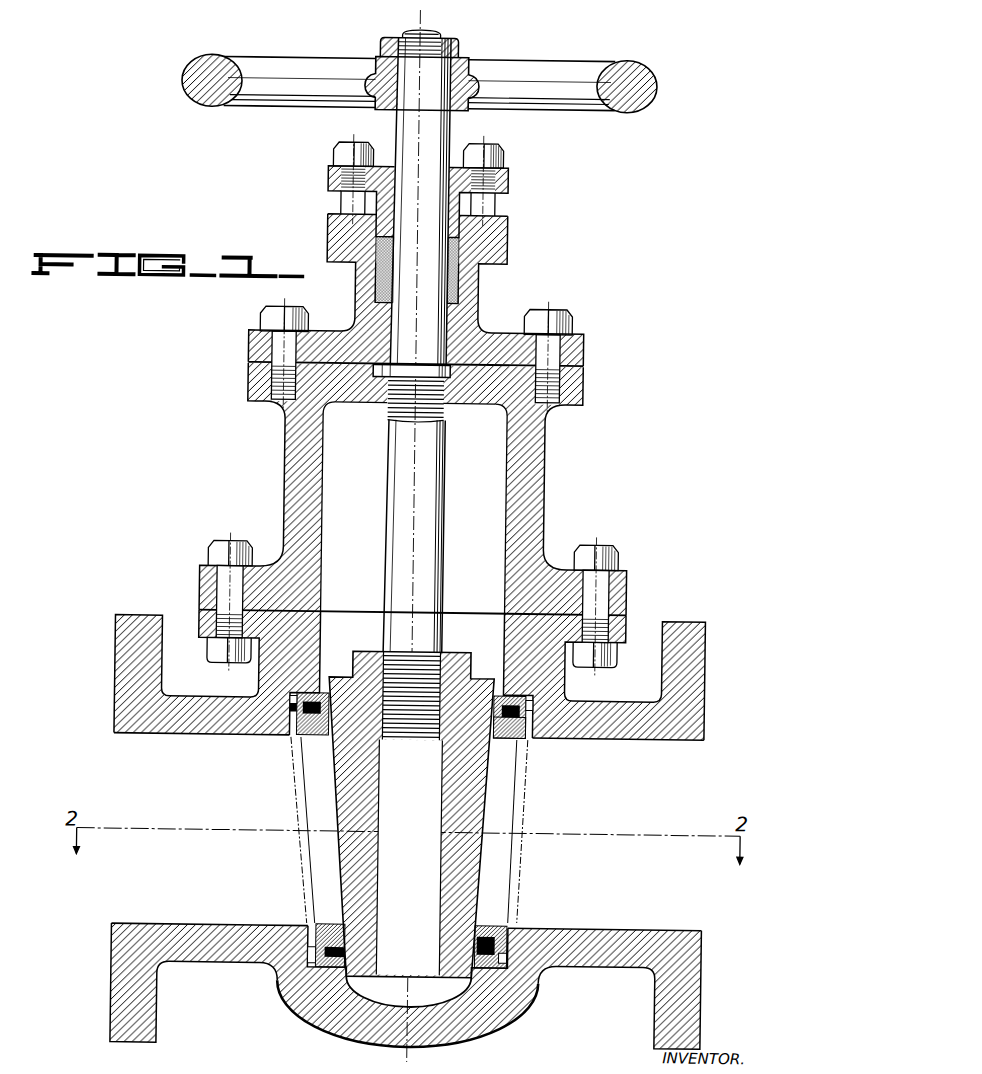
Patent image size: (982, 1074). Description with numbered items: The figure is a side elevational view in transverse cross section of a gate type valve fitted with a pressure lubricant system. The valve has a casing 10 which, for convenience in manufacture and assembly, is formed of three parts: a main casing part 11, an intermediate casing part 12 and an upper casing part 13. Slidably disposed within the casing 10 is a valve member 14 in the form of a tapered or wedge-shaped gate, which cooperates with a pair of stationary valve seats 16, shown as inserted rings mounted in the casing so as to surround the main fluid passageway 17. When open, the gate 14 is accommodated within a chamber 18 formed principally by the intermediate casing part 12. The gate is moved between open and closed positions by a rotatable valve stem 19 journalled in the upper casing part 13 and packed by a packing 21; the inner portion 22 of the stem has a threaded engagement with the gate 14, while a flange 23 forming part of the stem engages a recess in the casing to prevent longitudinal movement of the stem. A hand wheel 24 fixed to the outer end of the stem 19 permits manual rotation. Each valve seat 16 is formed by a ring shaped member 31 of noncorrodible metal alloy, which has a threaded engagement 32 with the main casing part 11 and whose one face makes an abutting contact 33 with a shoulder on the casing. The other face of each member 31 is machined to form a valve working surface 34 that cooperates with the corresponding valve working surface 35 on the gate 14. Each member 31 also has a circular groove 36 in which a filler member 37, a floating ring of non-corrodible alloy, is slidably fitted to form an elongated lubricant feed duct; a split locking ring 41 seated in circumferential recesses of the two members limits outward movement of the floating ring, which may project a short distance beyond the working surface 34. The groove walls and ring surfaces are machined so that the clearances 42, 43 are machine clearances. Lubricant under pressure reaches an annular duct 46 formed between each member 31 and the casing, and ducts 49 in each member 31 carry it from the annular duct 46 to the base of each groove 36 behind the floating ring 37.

The casing 10 is at (638, 570).
The main casing part 11 is at (696, 640).
The intermediate casing part 12 is at (532, 486).
The upper casing part 13 is at (474, 314).
The valve member 14 is at (462, 662).
The stationary valve seats 16 is at (286, 786).
The main fluid passageway 17 is at (696, 752).
The chamber 18 is at (491, 436).
The valve stem 19 is at (426, 245).
The packing 21 is at (444, 272).
The inner portion of stem 22 is at (427, 560).
The flange 23 is at (378, 377).
The hand wheel 24 is at (632, 101).
The ring shaped member 31 is at (500, 929).
The threaded engagement 32 is at (320, 698).
The abutting contact 33 is at (518, 819).
The valve working surface 34 is at (332, 729).
The valve working surface 35 is at (523, 776).
The groove 36 is at (315, 929).
The filler member 37 is at (485, 929).
The split locking ring 41 is at (502, 739).
The clearance 42 is at (516, 989).
The clearance 43 is at (340, 936).
The annular duct 46 is at (299, 701).
The ducts 49 is at (529, 734).